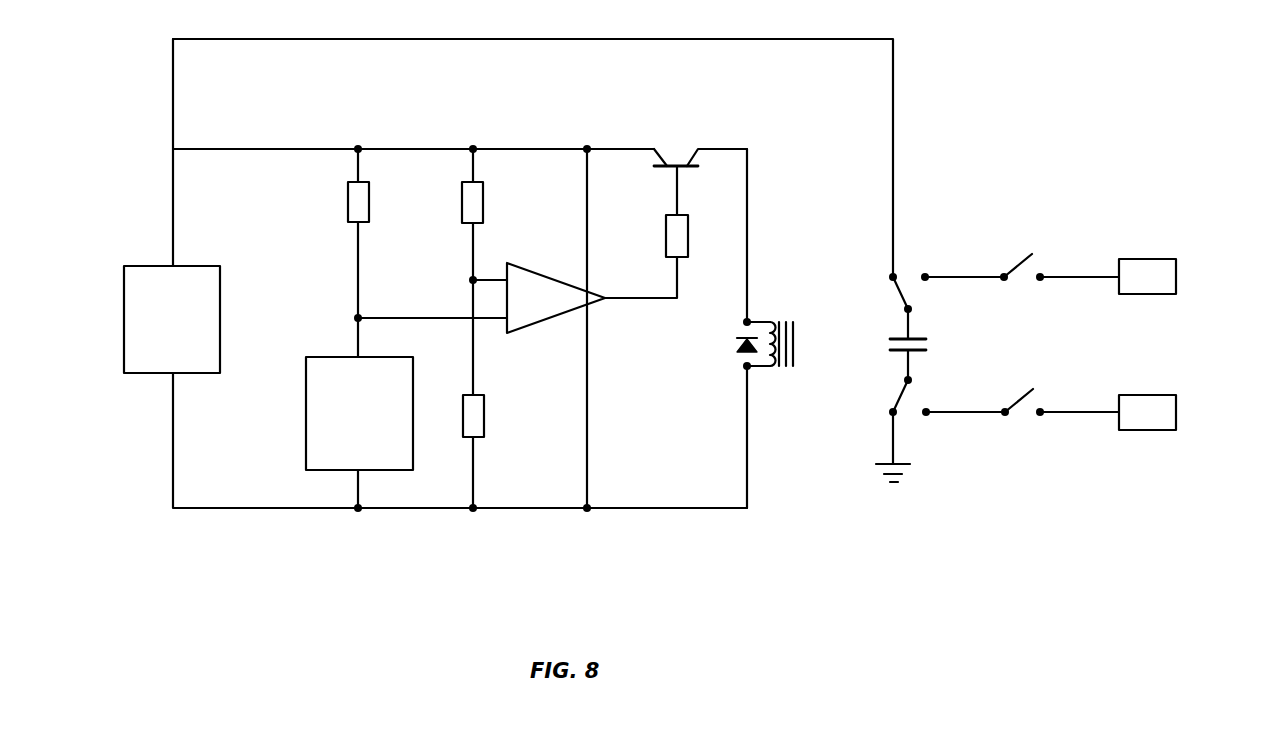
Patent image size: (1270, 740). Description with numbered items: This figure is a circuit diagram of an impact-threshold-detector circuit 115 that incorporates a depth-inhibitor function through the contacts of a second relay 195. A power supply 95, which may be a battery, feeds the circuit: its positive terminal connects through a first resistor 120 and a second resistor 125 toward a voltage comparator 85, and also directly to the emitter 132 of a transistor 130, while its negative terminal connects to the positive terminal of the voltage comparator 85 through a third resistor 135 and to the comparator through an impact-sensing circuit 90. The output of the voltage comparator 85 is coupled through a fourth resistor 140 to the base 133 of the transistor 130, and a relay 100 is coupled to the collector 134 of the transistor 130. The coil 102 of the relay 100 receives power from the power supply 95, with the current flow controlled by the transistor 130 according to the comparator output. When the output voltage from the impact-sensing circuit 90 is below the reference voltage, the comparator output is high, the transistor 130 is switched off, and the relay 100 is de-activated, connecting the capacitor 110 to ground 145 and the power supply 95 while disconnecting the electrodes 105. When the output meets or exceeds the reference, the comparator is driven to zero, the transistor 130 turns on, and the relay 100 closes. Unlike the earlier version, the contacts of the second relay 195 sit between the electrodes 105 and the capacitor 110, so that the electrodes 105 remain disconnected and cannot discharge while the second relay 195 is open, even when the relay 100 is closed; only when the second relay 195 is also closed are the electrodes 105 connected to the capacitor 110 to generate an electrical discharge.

The voltage comparator 85 is at (546, 326).
The impact-sensing circuit 90 is at (323, 357).
The power supply 95 is at (199, 266).
The relay 100 is at (759, 378).
The coil 102 is at (771, 320).
The electrodes 105 is at (1163, 259).
The capacitor 110 is at (918, 338).
The impact-threshold-detector circuit 115 is at (714, 584).
The first resistor 120 is at (348, 197).
The second resistor 125 is at (462, 197).
The transistor 130 is at (678, 158).
The emitter 132 is at (663, 160).
The base 133 is at (691, 168).
The collector 134 is at (689, 150).
The third resistor 135 is at (484, 418).
The fourth resistor 140 is at (666, 230).
The ground 145 is at (885, 462).
The second relay 195 is at (1022, 290).